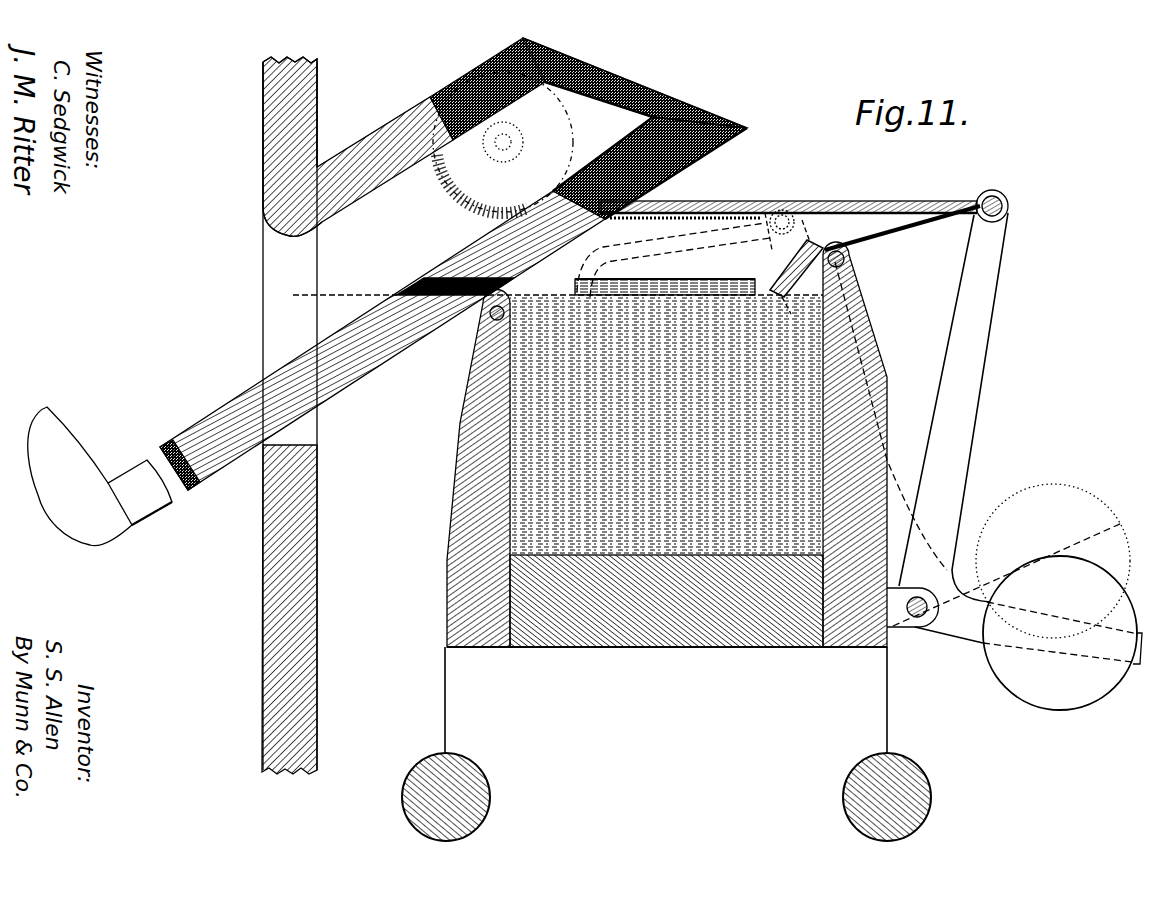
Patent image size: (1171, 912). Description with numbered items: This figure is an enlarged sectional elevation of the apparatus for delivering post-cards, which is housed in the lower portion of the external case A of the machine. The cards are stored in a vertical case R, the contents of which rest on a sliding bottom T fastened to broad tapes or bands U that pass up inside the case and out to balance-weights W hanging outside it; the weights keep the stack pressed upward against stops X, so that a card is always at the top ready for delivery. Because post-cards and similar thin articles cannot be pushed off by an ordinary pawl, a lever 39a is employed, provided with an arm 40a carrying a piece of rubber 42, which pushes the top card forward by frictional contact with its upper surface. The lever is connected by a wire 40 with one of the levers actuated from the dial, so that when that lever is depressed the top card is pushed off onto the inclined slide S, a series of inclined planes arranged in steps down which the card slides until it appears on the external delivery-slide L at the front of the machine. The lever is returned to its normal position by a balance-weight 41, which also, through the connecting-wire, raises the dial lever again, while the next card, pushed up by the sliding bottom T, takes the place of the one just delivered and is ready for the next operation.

The external case A is at (276, 682).
The inclined slide S is at (453, 264).
The delivery slide L is at (100, 476).
The vertical case R is at (667, 444).
The sliding bottom T is at (667, 601).
The stop X is at (696, 279).
The tape U is at (445, 695).
The balance-weight W is at (666, 797).
The piece of rubber 42 is at (790, 266).
The connecting-wire 40 is at (853, 201).
The arm 40a is at (902, 230).
The lever 39a is at (921, 416).
The balance-weight 41 is at (1017, 597).